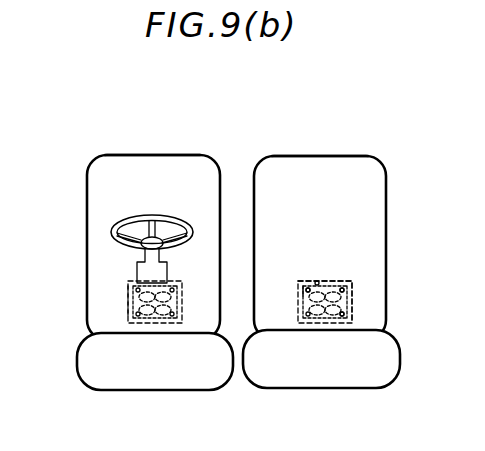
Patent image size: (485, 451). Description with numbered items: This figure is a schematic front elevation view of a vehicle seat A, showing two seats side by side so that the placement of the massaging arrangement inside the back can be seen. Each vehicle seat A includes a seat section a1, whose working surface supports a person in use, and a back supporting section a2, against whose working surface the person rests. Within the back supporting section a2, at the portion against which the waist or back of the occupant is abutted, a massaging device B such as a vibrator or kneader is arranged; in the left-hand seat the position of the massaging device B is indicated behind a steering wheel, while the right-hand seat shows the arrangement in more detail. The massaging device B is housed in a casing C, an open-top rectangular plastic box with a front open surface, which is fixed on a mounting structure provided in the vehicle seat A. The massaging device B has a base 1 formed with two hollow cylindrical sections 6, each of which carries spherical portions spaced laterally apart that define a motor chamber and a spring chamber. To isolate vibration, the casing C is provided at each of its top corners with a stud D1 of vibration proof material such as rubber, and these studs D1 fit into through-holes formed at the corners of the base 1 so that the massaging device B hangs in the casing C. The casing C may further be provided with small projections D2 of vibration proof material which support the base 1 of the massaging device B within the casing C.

The vehicle seat A is at (104, 146).
The seat section a1 is at (100, 378).
The back supporting section a2 is at (197, 170).
The massaging device B is at (135, 300).
The casing C is at (128, 315).
The base 1 is at (330, 292).
The hollow cylindrical section 6 is at (298, 301).
The stud D1 is at (338, 292).
The small projection D2 is at (318, 280).